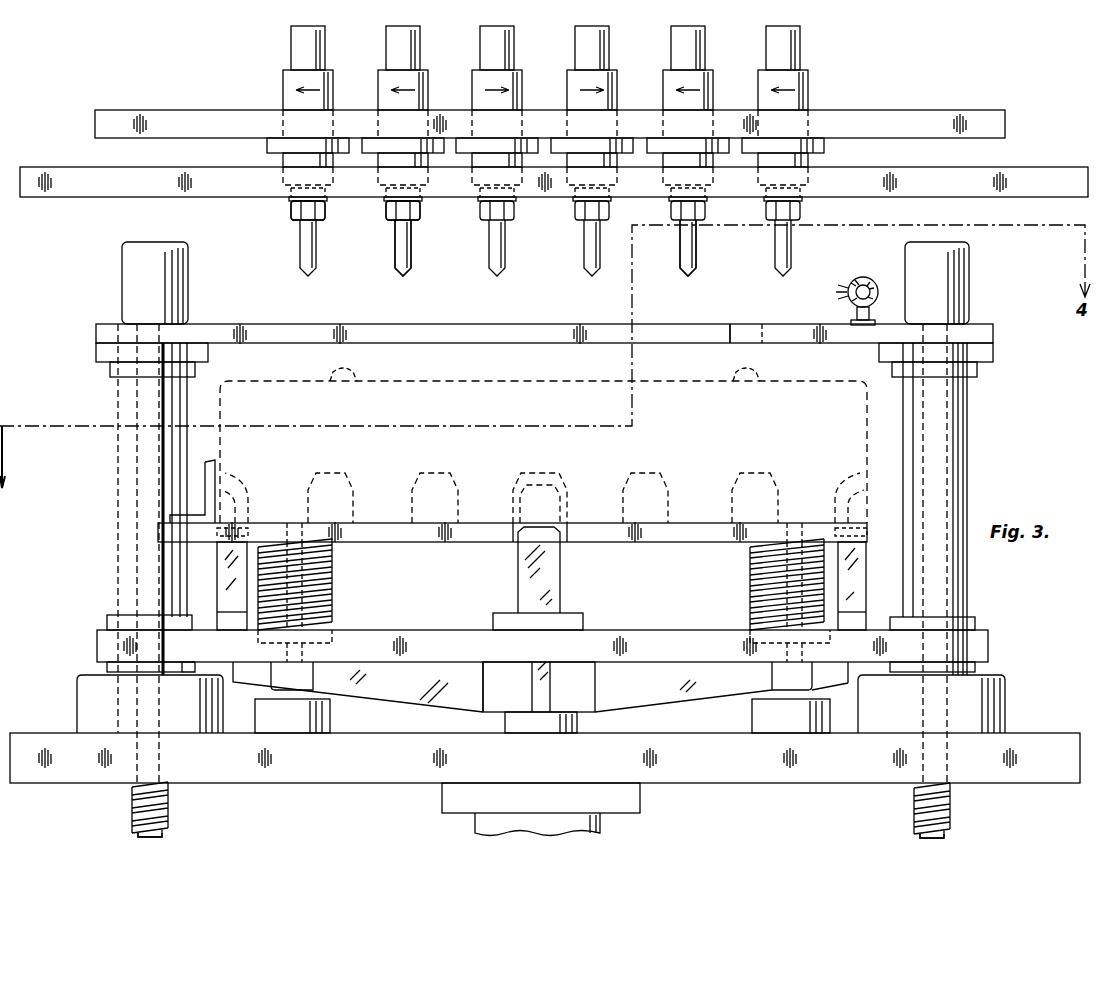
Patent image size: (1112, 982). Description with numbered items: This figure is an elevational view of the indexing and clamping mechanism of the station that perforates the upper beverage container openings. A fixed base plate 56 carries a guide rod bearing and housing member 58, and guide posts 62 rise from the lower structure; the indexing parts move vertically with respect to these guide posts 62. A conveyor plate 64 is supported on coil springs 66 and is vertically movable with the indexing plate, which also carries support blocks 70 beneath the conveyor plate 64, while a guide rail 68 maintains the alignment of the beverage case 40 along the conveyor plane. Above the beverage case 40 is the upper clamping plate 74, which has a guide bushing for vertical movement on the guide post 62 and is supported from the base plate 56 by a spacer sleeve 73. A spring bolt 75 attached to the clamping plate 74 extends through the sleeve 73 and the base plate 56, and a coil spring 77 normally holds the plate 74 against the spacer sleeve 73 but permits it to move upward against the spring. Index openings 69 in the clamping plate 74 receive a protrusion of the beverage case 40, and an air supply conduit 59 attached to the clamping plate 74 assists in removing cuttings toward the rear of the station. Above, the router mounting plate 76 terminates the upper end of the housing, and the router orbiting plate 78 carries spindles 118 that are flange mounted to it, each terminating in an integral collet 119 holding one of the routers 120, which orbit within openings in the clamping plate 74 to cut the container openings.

The spindles 118 is at (780, 96).
The collet 119 is at (385, 210).
The routers 120 is at (490, 238).
The router orbiting plate 78 is at (1005, 128).
The router mounting plate 76 is at (1045, 168).
The guide posts 62 is at (123, 283).
The upper clamping plate 74 is at (780, 335).
The index openings 69 is at (733, 336).
The air supply conduit 59 is at (856, 278).
The spacer sleeve 73 is at (968, 465).
The beverage case 40 is at (505, 385).
The guide rail 68 is at (206, 472).
The conveyor plate 64 is at (715, 540).
The coil springs 66 is at (333, 581).
The support posts 70 is at (217, 600).
The fixed base plate 56 is at (70, 782).
The guide rod bearing and housing member 58 is at (605, 834).
The spring bolt 75 is at (920, 828).
The coil spring 77 is at (950, 805).